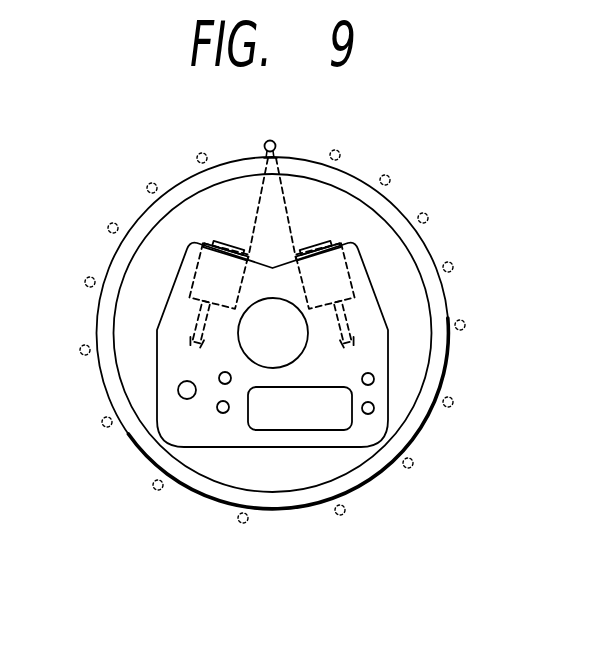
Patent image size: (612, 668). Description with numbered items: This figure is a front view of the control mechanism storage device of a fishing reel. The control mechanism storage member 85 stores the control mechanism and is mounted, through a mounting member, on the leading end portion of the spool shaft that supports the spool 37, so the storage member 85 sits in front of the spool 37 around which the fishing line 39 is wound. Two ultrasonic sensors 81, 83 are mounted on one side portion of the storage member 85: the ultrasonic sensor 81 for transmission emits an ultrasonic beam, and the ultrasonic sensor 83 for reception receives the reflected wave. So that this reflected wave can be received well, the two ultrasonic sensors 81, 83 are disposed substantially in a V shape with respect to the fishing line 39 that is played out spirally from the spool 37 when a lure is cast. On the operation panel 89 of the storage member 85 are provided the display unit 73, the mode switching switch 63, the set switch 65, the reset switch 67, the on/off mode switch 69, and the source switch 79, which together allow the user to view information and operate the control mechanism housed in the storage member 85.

The spool 37 is at (443, 303).
The fishing line 39 is at (275, 142).
The mode switching switch 63 is at (218, 378).
The set switch 65 is at (218, 413).
The reset switch 67 is at (375, 377).
The on/off mode switch 69 is at (374, 412).
The display unit 73 is at (262, 423).
The source switch 79 is at (180, 396).
The ultrasonic sensor for transmission 81 is at (213, 237).
The ultrasonic sensor for reception 83 is at (368, 247).
The control mechanism storage member 85 is at (376, 294).
The operation panel 89 is at (291, 431).